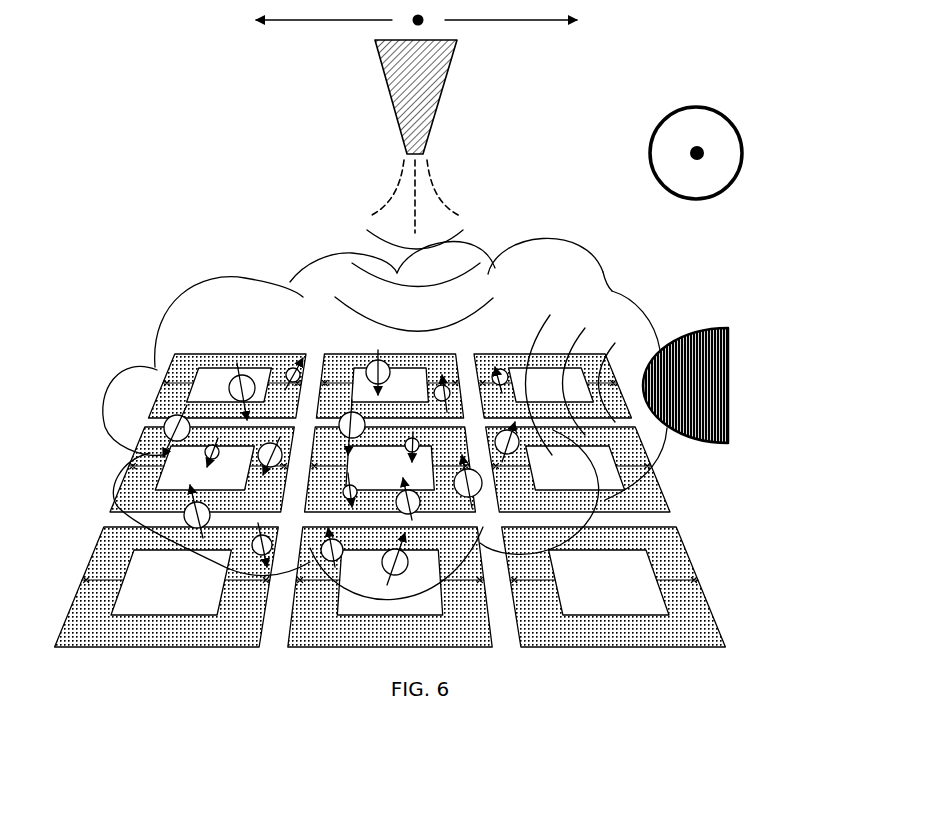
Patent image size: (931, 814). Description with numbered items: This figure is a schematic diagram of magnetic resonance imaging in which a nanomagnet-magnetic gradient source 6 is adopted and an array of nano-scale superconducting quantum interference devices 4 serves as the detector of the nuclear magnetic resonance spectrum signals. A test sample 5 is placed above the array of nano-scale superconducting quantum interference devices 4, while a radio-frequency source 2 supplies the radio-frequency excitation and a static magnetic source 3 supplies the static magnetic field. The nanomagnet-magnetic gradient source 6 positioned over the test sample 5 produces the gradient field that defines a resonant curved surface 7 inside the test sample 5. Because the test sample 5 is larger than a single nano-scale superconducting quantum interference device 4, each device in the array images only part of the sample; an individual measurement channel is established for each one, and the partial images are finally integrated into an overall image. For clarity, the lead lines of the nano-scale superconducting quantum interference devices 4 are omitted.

The radio-frequency source 2 is at (705, 383).
The static magnetic source 3 is at (727, 147).
The nano-scale superconducting quantum interference device 4 is at (132, 492).
The test sample 5 is at (603, 272).
The nanomagnet-magnetic gradient source 6 is at (430, 97).
The resonant curved surface 7 is at (492, 302).